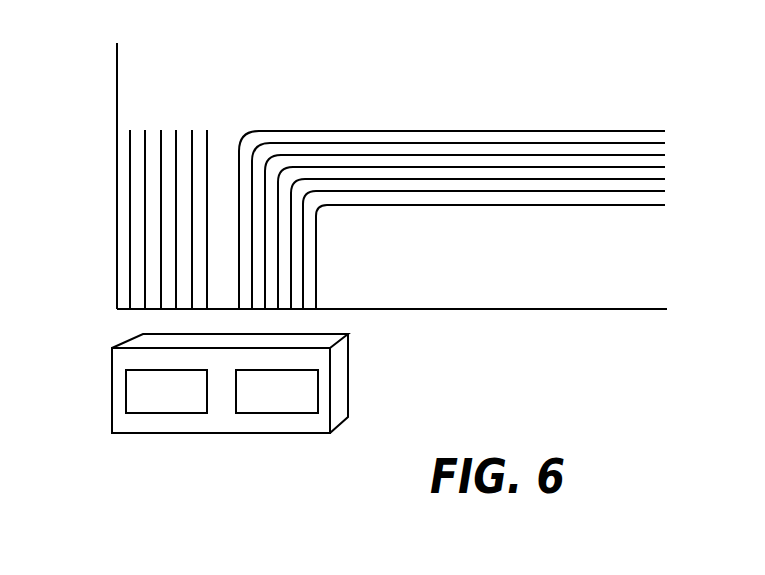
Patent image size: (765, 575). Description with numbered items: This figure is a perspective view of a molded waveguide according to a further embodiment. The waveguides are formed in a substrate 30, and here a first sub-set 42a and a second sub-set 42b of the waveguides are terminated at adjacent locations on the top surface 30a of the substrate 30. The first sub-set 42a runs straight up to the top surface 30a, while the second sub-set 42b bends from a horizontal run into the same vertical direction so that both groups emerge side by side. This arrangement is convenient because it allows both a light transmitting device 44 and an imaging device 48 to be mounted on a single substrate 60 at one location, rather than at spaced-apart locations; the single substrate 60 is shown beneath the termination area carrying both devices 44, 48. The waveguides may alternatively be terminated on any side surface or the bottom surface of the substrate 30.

The substrate 30 is at (562, 309).
The top surface 30a is at (245, 97).
The first sub-set 42a is at (113, 242).
The second sub-set 42b is at (333, 242).
The light transmitting device 44 is at (166, 391).
The imaging device 48 is at (277, 391).
The single substrate 60 is at (278, 383).